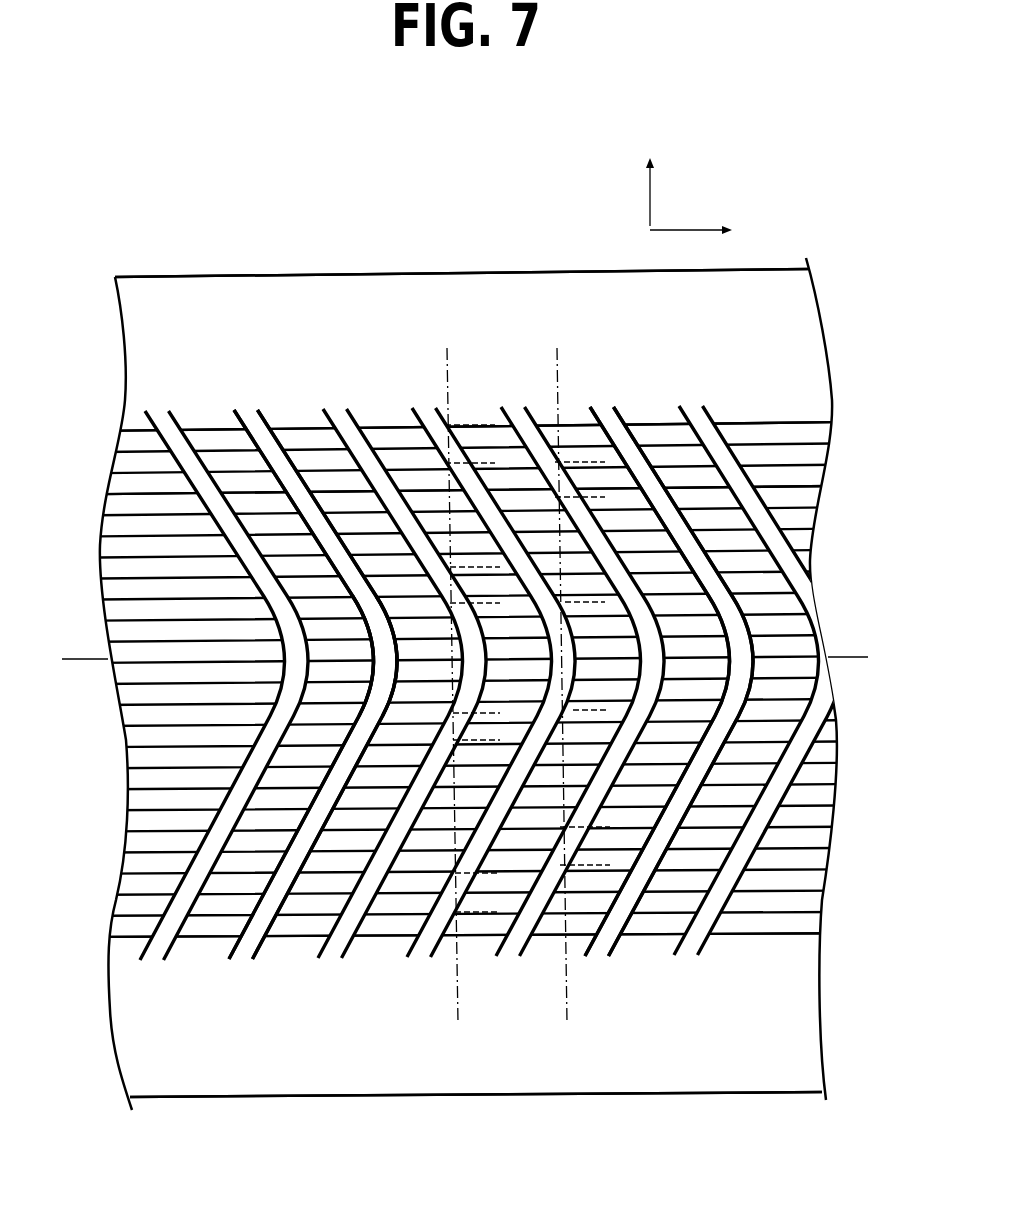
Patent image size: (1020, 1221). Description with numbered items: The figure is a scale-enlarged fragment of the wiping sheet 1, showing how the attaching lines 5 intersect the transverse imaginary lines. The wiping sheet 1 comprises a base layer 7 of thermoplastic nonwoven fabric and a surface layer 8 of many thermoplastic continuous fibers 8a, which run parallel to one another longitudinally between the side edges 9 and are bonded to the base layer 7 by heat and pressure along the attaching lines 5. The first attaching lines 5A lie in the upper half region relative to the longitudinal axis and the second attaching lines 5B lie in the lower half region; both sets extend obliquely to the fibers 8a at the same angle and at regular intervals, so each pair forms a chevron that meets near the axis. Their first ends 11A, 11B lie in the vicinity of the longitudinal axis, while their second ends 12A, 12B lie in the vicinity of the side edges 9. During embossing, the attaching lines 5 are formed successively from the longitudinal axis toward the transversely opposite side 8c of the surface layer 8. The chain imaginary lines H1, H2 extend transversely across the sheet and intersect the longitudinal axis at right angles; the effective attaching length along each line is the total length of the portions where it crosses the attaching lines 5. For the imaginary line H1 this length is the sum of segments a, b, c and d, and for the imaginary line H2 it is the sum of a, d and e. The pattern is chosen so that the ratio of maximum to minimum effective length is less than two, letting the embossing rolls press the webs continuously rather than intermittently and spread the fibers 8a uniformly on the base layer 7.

The wiping sheet 1 is at (507, 258).
The attaching lines 5 is at (333, 432).
The first attaching lines 5A is at (655, 477).
The second attaching lines 5B is at (723, 723).
The base layer 7 is at (783, 1097).
The surface layer 8 is at (782, 900).
The continuous fibers 8a is at (803, 485).
The transversely opposite side 8c is at (797, 418).
The side edges 9 is at (782, 347).
The first end of first attaching line 11A is at (393, 647).
The first end of second attaching line 11B is at (399, 544).
The second end of first attaching line 12A is at (256, 422).
The second end of second attaching line 12B is at (256, 945).
The imaginary line H1 is at (457, 1005).
The imaginary line H2 is at (565, 1005).